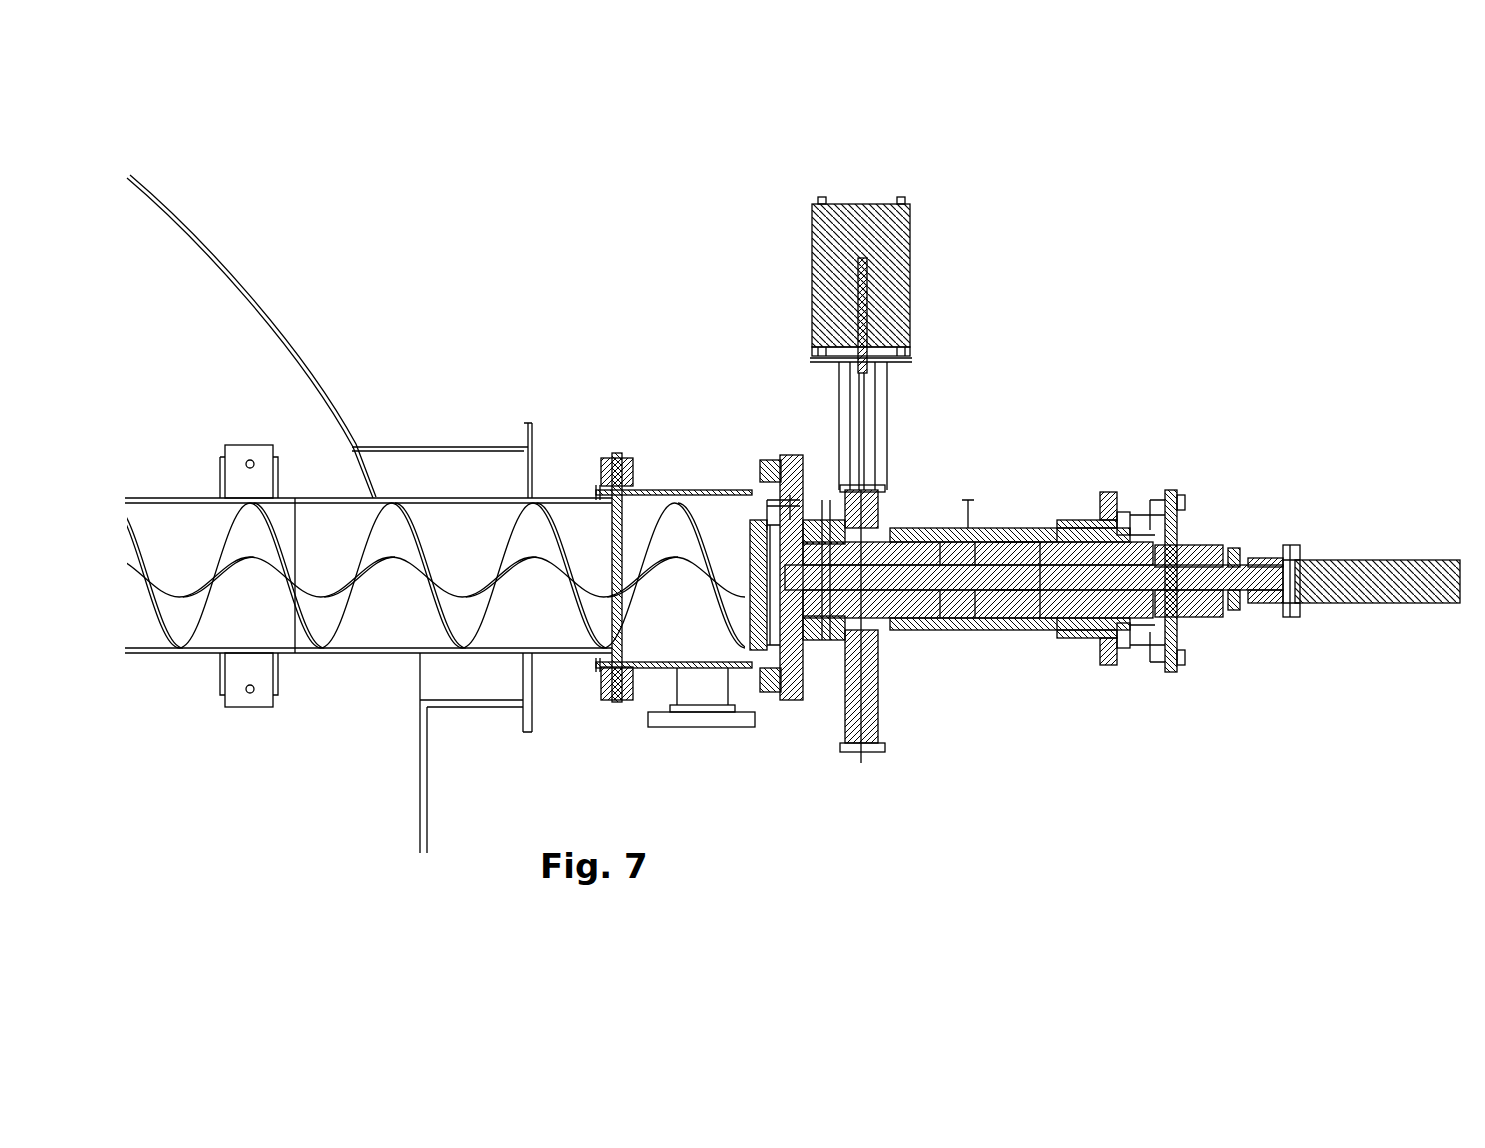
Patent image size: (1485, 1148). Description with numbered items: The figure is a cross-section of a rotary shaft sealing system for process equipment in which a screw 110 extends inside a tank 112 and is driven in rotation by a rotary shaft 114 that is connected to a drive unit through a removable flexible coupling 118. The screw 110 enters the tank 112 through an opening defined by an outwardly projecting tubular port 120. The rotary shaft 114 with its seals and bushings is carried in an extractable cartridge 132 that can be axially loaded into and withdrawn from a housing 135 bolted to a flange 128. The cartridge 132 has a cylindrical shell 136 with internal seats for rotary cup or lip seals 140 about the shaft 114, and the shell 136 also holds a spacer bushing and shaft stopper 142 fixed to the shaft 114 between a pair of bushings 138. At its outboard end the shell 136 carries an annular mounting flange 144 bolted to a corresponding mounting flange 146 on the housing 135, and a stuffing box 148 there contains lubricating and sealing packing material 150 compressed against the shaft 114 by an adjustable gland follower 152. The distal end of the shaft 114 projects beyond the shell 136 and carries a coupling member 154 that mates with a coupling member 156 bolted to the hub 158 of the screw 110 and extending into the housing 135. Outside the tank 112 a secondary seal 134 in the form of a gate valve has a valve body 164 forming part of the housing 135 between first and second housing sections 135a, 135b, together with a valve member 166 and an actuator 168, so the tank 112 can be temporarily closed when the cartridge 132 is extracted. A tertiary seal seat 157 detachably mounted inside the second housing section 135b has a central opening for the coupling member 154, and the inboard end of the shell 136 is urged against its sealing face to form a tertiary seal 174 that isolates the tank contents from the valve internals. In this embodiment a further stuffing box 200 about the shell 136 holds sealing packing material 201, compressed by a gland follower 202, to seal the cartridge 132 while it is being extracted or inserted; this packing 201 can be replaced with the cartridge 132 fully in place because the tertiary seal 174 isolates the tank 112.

The screw 110 is at (283, 630).
The tank 112 is at (222, 238).
The rotary shaft 114 is at (962, 592).
The removable flexible coupling 118 is at (1328, 553).
The tubular port 120 is at (470, 442).
The flange 128 is at (775, 452).
The extractable cartridge 132 is at (1190, 498).
The secondary seal 134 is at (816, 172).
The housing 135 is at (968, 500).
The first housing section 135a is at (1000, 527).
The second housing section 135b is at (842, 483).
The cylindrical shell 136 is at (1040, 522).
The bushings 138 is at (905, 527).
The rotary cup or lip seals 140 is at (888, 650).
The spacer bushing and shaft stopper 142 is at (978, 640).
The annular mounting flange 144 is at (1178, 655).
The mounting flange 146 is at (1112, 682).
The stuffing box 148 is at (1200, 545).
The lubricating and sealing packing material 150 is at (1205, 612).
The gland follower 152 is at (1232, 545).
The coupling member 154 is at (816, 690).
The coupling member 156 is at (775, 692).
The tertiary seal seat 157 is at (836, 642).
The hub 158 is at (748, 540).
The valve body 164 is at (830, 528).
The valve member 166 is at (880, 402).
The actuator 168 is at (915, 257).
The tertiary seal 174 is at (796, 484).
The stuffing box 200 is at (1063, 652).
The sealing packing material 201 is at (1085, 518).
The gland follower 202 is at (1128, 505).